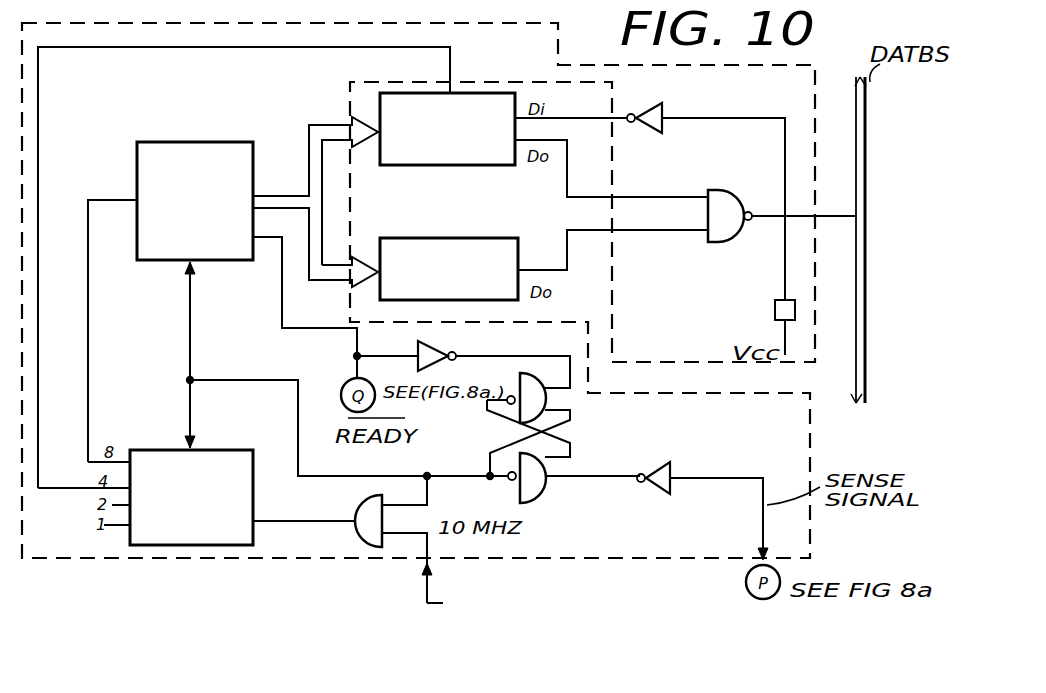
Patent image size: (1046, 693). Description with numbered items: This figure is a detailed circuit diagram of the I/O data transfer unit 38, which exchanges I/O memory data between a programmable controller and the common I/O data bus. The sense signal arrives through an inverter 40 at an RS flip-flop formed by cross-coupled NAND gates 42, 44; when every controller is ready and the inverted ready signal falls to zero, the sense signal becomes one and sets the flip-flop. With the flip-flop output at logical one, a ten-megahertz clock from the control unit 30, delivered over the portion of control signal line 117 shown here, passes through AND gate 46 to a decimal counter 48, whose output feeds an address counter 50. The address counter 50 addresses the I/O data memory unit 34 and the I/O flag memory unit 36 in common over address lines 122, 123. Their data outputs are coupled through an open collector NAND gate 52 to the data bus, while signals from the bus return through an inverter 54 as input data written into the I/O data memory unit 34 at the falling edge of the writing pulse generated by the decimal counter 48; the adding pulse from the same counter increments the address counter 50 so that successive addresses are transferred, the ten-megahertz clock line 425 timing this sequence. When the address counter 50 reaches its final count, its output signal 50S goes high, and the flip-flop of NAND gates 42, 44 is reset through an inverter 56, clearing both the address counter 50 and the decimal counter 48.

The I/O data transfer unit 38 is at (462, 26).
The address counter 50 is at (212, 140).
The decimal counter 48 is at (262, 453).
The I/O data memory unit 34 is at (434, 90).
The I/O flag memory unit 36 is at (456, 238).
The address bus to I/O data memory 122 is at (336, 125).
The address bus to I/O flag memory 123 is at (344, 281).
The output signal of address counter 50S is at (314, 334).
The inverter 56 is at (432, 352).
The NAND gate 44 is at (548, 400).
The NAND gate 42 is at (550, 470).
The 10 MHz clock line 425 is at (434, 479).
The AND gate 46 is at (358, 500).
The inverter 40 is at (660, 490).
The inverter 54 is at (664, 114).
The open collector NAND gate 52 is at (730, 180).
The control signal line 117 is at (428, 575).
The control unit 30 is at (548, 607).